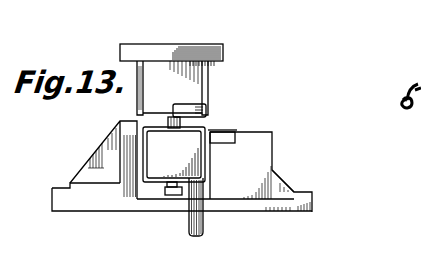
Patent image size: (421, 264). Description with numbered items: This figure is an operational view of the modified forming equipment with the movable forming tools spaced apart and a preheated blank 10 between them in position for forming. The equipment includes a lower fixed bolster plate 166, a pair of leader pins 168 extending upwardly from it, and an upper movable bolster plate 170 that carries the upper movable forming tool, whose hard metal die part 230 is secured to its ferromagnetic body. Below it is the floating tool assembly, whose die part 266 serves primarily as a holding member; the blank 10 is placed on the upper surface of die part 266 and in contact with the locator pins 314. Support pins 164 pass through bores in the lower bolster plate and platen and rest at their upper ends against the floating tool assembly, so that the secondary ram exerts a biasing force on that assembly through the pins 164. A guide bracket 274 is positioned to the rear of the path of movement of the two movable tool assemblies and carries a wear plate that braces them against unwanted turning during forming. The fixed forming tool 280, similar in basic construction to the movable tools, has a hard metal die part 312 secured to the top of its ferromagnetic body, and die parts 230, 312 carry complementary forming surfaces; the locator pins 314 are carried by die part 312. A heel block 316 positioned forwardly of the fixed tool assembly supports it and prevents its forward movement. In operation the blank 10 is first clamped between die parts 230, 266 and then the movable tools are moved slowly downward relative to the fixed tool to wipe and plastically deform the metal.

The blank 10 is at (212, 130).
The support pin 164 is at (174, 231).
The lower fixed bolster plate 166 is at (241, 199).
The leader pin 168 is at (166, 189).
The upper movable bolster plate 170 is at (188, 50).
The die part 230 is at (190, 106).
The die part 266 is at (160, 128).
The guide bracket 274 is at (88, 166).
The fixed forming tool 280 is at (286, 148).
The die part 312 is at (240, 131).
The locator pin 314 is at (228, 130).
The heel block 316 is at (281, 182).